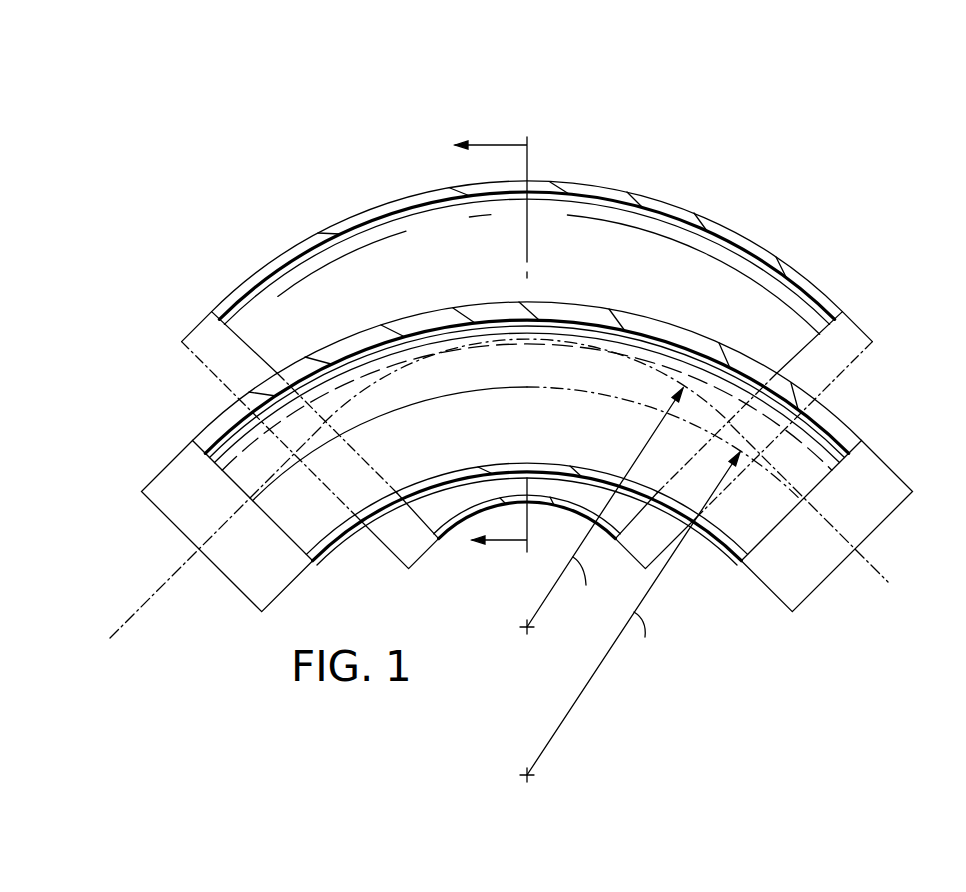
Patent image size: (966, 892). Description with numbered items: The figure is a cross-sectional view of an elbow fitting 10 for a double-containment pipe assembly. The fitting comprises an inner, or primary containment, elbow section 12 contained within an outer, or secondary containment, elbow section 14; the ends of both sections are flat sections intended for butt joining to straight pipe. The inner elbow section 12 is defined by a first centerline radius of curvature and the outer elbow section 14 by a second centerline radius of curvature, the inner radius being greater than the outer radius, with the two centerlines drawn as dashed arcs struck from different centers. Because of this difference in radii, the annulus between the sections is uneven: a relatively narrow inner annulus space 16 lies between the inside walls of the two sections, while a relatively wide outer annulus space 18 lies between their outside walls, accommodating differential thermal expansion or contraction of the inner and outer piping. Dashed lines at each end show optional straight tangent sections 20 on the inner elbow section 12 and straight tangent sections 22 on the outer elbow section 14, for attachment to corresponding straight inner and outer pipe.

The elbow fitting 10 is at (710, 199).
The inner elbow section 12 is at (652, 320).
The outer elbow section 14 is at (764, 246).
The inner annulus space 16 is at (489, 489).
The outer annulus space 18 is at (447, 247).
The straight tangent sections 20 is at (190, 446).
The straight tangent sections 22 is at (195, 333).